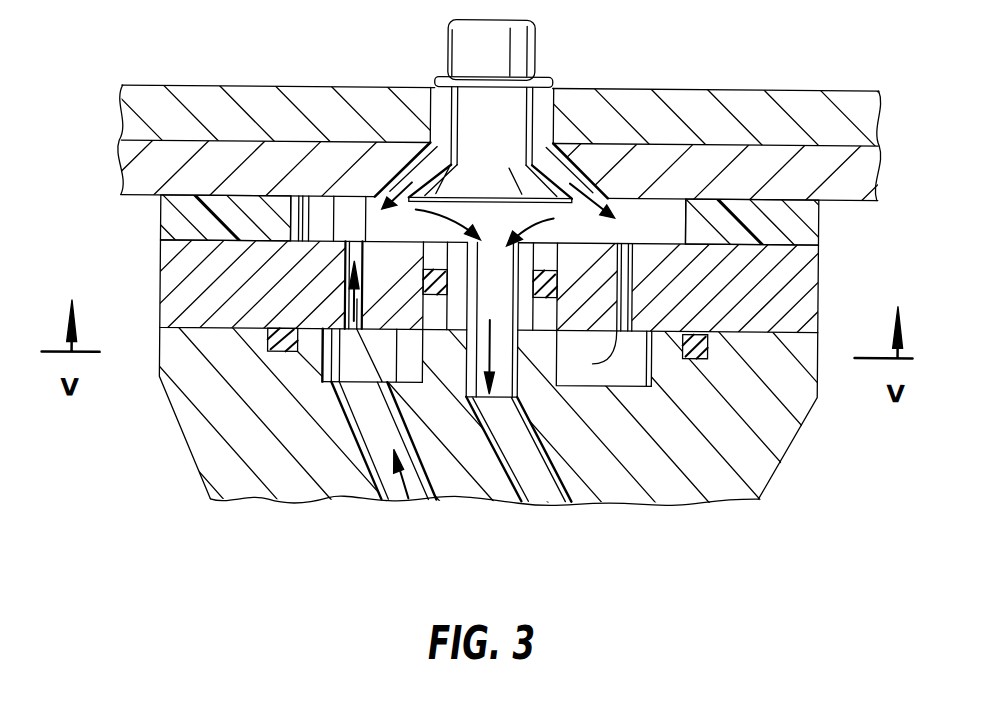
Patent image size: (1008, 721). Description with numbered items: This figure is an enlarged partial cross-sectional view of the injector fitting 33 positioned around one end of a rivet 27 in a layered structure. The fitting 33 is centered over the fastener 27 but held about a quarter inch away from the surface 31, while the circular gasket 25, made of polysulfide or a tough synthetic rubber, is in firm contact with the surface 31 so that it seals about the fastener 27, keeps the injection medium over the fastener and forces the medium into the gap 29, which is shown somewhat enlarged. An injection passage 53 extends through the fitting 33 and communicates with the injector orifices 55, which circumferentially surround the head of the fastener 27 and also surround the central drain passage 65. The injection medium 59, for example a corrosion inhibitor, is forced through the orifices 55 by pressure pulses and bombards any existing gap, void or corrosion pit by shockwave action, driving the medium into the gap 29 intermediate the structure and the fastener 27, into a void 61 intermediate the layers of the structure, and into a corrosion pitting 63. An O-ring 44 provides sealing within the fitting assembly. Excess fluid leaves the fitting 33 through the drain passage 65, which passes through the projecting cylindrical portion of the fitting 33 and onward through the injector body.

The gasket 25 is at (160, 211).
The rivet 27 is at (575, 111).
The gap 29 is at (429, 86).
The surface 31 is at (848, 198).
The injector fitting 33 is at (775, 474).
The O-ring 44 is at (712, 348).
The injection passage 53 is at (400, 504).
The injector orifices 55 is at (347, 276).
The injection medium 59 is at (420, 506).
The void 61 is at (560, 146).
The corrosion pitting 63 is at (601, 184).
The drain passage 65 is at (557, 493).